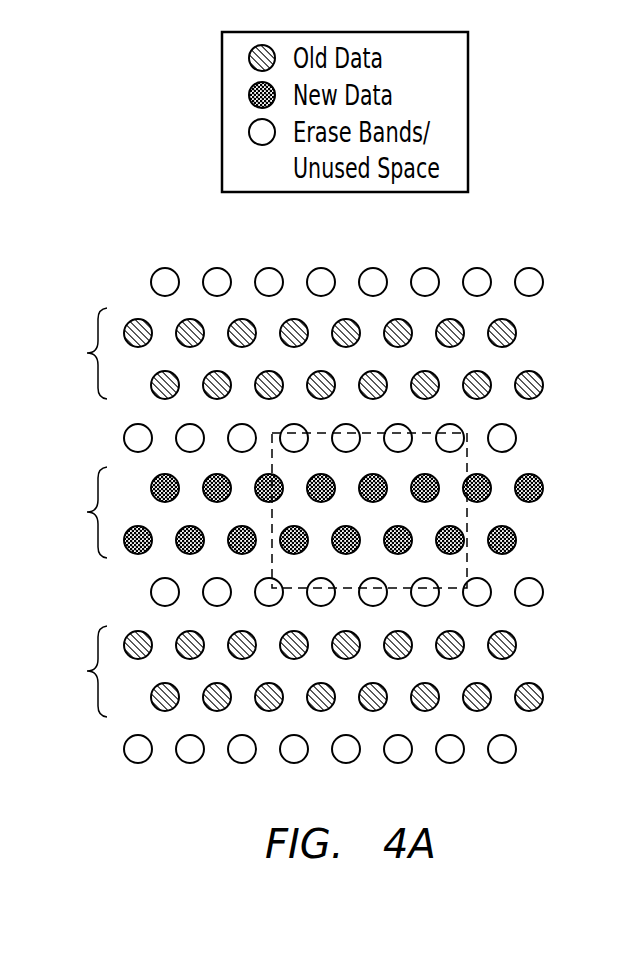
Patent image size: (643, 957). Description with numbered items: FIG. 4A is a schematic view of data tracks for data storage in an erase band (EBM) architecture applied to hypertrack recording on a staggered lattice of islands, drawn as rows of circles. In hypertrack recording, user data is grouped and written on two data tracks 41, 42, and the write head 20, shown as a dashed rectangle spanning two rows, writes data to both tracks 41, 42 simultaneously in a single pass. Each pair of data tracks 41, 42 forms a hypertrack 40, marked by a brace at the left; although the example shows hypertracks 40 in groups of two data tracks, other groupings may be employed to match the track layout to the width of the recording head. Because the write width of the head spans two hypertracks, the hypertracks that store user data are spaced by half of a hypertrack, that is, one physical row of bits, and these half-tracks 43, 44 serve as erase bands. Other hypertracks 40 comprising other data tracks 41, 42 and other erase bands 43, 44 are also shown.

The write head 20 is at (467, 467).
The hypertrack 40 is at (81, 512).
The data track 41 is at (518, 333).
The data track 42 is at (545, 385).
The half-track 43 is at (527, 433).
The half-track 44 is at (545, 281).